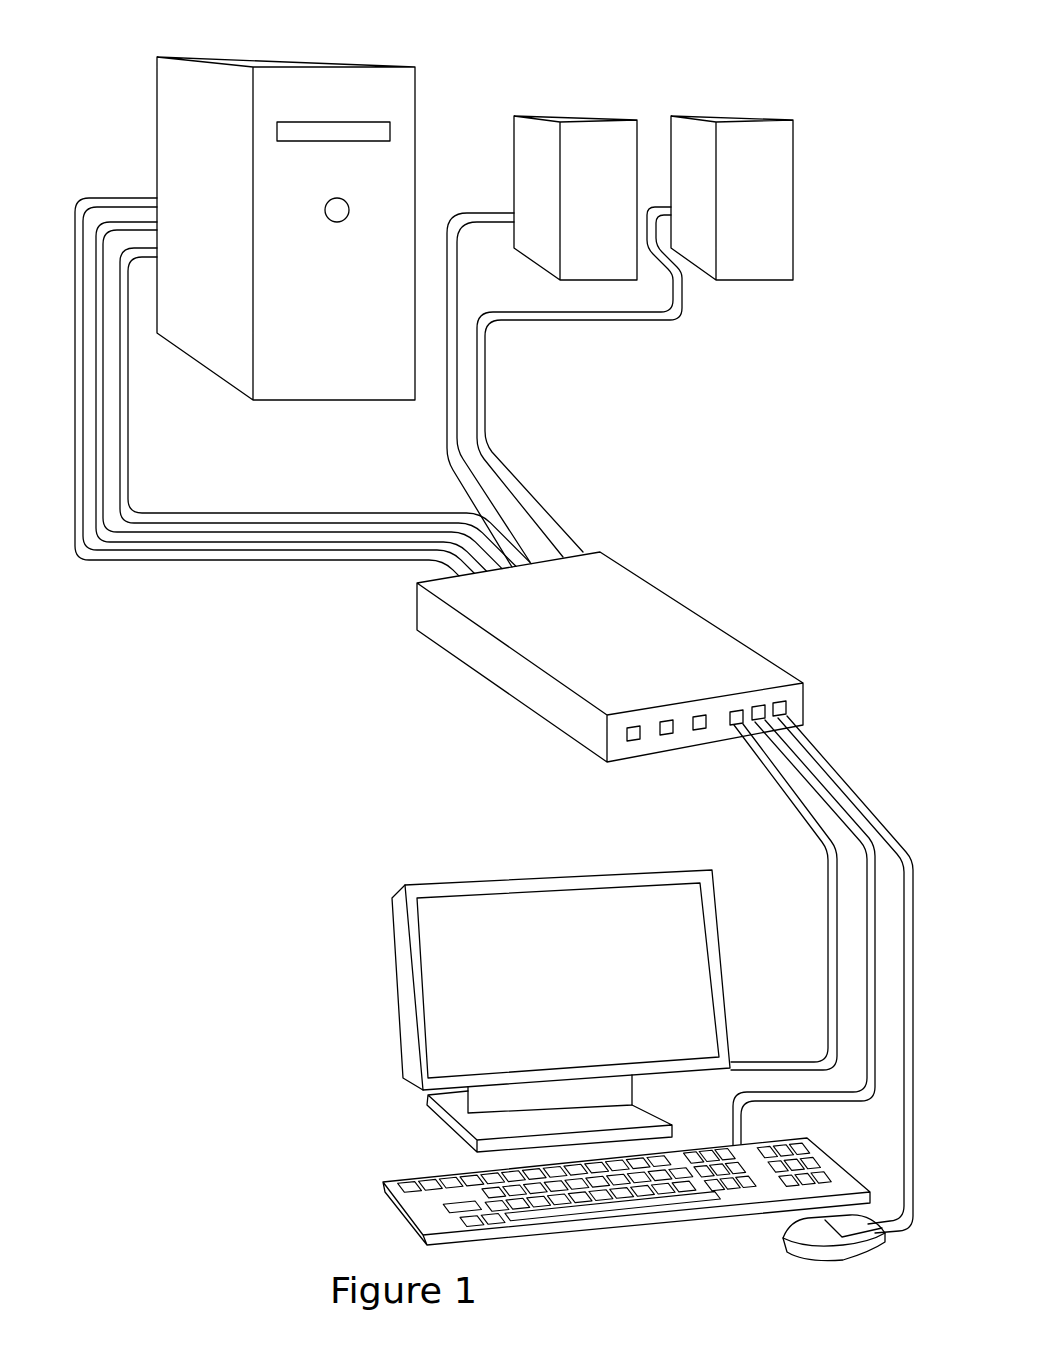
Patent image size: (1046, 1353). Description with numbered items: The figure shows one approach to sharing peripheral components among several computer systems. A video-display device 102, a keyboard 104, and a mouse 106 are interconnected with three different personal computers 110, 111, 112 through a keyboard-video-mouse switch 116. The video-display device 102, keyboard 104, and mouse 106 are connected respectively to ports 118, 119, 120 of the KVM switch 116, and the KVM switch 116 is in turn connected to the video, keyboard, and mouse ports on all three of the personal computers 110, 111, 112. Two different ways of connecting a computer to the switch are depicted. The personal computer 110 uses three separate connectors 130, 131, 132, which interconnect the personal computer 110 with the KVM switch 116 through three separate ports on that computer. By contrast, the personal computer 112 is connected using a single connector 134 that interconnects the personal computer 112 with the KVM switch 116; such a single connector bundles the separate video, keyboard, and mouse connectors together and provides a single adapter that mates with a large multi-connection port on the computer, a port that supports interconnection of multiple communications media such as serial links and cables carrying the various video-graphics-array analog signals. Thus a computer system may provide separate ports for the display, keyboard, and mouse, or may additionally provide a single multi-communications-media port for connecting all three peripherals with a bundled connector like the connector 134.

The video-display device 102 is at (392, 953).
The keyboard 104 is at (400, 1172).
The mouse 106 is at (782, 1248).
The personal computer 110 is at (348, 53).
The personal computer 111 is at (567, 107).
The personal computer 112 is at (715, 103).
The keyboard-video-mouse (KVM) switch 116 is at (683, 580).
The port 118 is at (738, 713).
The port 119 is at (762, 708).
The port 120 is at (783, 700).
The connector 130 is at (232, 513).
The connector 131 is at (317, 532).
The connector 132 is at (307, 560).
The single connector 134 is at (487, 392).